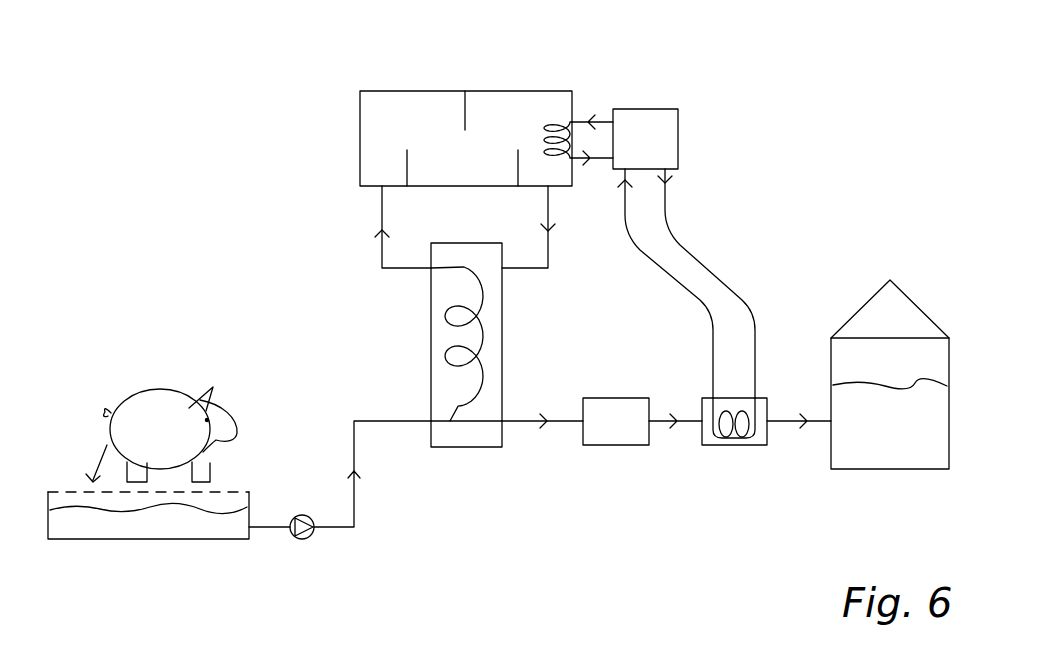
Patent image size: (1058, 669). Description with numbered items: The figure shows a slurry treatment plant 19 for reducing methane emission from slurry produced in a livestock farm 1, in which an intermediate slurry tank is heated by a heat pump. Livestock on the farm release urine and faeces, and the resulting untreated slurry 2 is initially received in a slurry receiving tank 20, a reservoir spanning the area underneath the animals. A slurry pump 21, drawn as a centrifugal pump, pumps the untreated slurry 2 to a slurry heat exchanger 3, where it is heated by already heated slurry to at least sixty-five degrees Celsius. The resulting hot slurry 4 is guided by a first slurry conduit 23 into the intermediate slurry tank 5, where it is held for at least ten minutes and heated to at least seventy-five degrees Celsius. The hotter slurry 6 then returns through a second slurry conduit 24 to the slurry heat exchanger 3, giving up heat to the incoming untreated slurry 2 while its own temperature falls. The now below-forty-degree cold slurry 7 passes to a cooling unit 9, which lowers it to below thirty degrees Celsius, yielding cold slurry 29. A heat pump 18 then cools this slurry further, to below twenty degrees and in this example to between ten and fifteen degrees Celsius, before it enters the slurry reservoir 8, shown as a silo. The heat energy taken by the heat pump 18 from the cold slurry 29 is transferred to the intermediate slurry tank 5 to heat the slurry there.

The livestock farm 1 is at (99, 333).
The untreated slurry 2 is at (68, 527).
The slurry heat exchanger 3 is at (503, 368).
The hot slurry 4 is at (357, 227).
The intermediate slurry tank 5 is at (422, 90).
The hot slurry 6 is at (562, 245).
The cold slurry 7 is at (522, 423).
The slurry reservoir 8 is at (880, 470).
The cooling unit 9 is at (618, 398).
The heat pump 18 is at (645, 108).
The slurry treatment plant 19 is at (235, 161).
The slurry receiving tank 20 is at (157, 542).
The slurry pump 21 is at (302, 539).
The first slurry conduit 23 is at (380, 258).
The second slurry conduit 24 is at (552, 242).
The cold slurry 29 is at (675, 423).